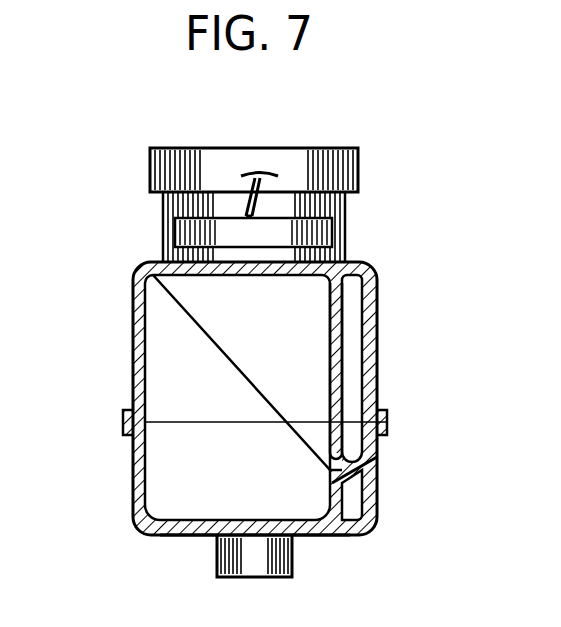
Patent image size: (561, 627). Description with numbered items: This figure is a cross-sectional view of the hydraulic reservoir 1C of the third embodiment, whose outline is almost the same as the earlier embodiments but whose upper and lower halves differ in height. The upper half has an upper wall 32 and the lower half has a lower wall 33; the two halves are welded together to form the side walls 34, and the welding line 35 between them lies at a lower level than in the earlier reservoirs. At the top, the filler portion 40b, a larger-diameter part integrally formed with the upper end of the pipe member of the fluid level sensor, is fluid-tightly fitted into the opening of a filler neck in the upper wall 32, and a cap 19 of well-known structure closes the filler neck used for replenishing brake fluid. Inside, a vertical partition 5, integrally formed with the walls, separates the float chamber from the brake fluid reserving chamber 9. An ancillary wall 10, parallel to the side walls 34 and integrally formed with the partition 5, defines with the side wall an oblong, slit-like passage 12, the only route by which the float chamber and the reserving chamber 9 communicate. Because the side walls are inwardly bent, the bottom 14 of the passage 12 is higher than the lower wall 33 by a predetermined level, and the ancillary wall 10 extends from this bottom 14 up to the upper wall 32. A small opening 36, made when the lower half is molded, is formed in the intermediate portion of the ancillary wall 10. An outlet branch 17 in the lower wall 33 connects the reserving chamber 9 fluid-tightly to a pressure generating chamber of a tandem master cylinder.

The hydraulic reservoir 1C is at (441, 150).
The filler portion 40b is at (224, 196).
The cap 19 is at (279, 163).
The upper wall 32 is at (166, 248).
The vertical partition 5 is at (192, 350).
The brake fluid reserving chamber 9 is at (192, 308).
The side walls 34 is at (138, 373).
The ancillary wall 10 is at (341, 309).
The oblong passage 12 is at (350, 368).
The small opening 36 is at (343, 444).
The bottom of oblong passage 14 is at (375, 473).
The welding line 35 is at (180, 422).
The lower wall 33 is at (182, 538).
The outlet branch 17 is at (249, 550).